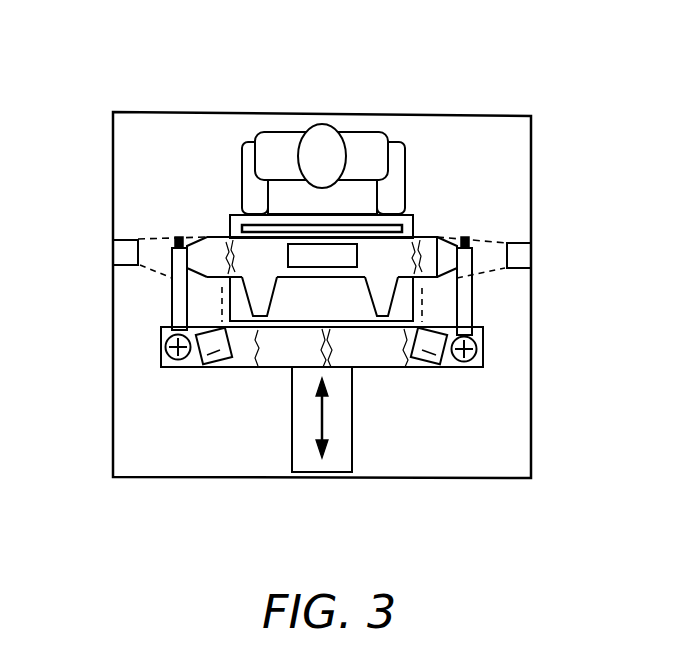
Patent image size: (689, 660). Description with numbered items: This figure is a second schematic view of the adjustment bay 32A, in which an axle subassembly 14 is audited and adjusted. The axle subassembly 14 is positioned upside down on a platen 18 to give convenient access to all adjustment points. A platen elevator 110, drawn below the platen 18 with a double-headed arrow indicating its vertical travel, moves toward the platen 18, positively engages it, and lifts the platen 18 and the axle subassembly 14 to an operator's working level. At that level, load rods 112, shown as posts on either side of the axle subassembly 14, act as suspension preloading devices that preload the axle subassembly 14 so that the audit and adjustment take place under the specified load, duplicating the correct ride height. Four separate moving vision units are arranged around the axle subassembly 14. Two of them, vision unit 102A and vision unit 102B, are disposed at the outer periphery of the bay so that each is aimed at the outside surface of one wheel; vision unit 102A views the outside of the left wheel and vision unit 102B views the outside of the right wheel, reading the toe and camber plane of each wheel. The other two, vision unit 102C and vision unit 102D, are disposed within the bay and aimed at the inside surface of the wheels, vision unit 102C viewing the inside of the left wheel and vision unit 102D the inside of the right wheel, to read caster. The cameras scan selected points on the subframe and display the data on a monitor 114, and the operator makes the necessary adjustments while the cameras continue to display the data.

The adjustment bay 32A is at (344, 253).
The axle subassembly 14 is at (322, 229).
The monitor 114 is at (232, 217).
The platen 18 is at (340, 300).
The load rods 112 is at (175, 313).
The moving vision unit 102A is at (518, 258).
The moving vision unit 102B is at (127, 252).
The moving vision unit 102C is at (442, 365).
The moving vision unit 102D is at (205, 367).
The platen elevator 110 is at (297, 423).